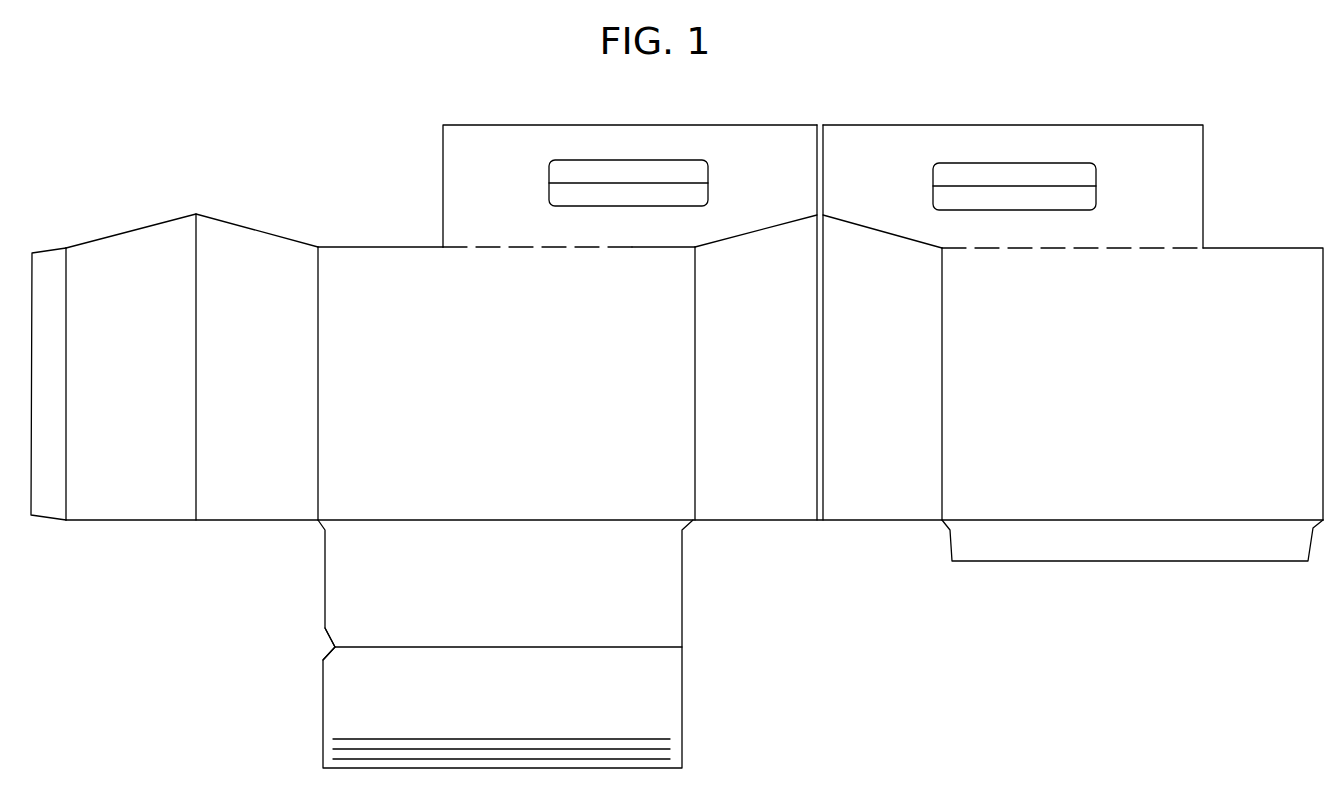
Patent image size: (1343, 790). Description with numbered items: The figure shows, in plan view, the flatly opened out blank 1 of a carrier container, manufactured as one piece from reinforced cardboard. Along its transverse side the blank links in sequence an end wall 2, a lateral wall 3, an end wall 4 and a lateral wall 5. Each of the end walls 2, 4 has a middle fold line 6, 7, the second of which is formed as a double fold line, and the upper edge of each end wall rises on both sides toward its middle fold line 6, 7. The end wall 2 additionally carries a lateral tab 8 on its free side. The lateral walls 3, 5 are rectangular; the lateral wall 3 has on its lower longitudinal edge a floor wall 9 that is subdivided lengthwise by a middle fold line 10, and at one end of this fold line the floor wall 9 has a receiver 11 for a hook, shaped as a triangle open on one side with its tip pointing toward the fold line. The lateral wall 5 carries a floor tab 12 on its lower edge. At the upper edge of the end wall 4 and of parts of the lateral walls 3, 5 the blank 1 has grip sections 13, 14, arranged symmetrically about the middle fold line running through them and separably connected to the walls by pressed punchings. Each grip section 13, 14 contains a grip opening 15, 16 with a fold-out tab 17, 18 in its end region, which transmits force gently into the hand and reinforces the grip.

The blank 1 is at (405, 152).
The end wall 2 is at (242, 386).
The lateral wall 3 is at (499, 386).
The end wall 4 is at (870, 387).
The lateral wall 5 is at (1124, 387).
The middle fold line 6 is at (196, 301).
The middle fold line 7 is at (822, 331).
The lateral tab 8 is at (52, 277).
The floor wall 9 is at (559, 576).
The middle fold line 10 is at (465, 648).
The receiver 11 is at (334, 647).
The floor tab 12 is at (1142, 540).
The grip section 13 is at (510, 196).
The grip section 14 is at (1170, 197).
The grip opening 15 is at (611, 195).
The grip opening 16 is at (1033, 197).
The tab 17 is at (586, 168).
The tab 18 is at (993, 173).